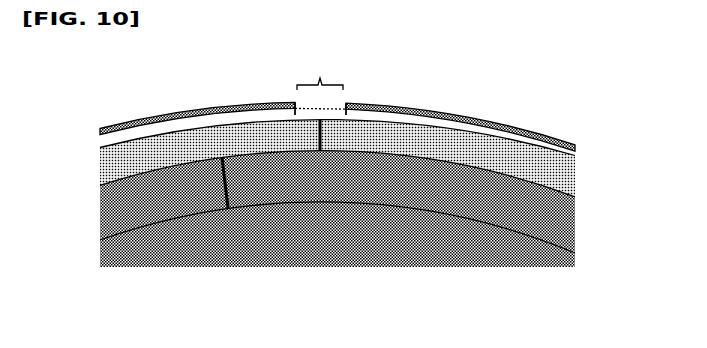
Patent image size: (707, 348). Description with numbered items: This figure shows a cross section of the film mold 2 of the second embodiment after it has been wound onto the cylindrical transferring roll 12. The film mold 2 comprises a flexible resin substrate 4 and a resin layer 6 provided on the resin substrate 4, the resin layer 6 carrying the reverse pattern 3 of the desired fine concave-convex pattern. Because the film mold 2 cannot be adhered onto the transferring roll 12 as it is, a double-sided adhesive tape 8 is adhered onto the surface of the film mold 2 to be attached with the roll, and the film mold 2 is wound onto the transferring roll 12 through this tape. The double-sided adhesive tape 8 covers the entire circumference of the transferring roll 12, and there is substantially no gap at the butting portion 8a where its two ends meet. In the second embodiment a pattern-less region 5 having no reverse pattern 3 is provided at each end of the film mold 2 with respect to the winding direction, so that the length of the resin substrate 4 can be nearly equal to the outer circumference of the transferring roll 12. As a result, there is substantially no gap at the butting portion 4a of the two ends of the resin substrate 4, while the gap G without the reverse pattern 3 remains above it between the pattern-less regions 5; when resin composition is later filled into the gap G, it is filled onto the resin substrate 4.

The film mold 2 is at (84, 137).
The reverse pattern 3 is at (428, 103).
The resin substrate 4 is at (374, 136).
The butting portion of both ends of the resin substrate 4a is at (318, 137).
The pattern-less region 5 is at (320, 102).
The resin layer 6 is at (575, 152).
The double-sided adhesive tape 8 is at (374, 163).
The butting portion of both ends of the double-sided adhesive tape 8a is at (225, 182).
The transferring roll 12 is at (298, 255).
The gap G is at (320, 74).